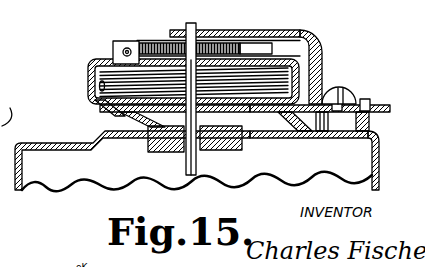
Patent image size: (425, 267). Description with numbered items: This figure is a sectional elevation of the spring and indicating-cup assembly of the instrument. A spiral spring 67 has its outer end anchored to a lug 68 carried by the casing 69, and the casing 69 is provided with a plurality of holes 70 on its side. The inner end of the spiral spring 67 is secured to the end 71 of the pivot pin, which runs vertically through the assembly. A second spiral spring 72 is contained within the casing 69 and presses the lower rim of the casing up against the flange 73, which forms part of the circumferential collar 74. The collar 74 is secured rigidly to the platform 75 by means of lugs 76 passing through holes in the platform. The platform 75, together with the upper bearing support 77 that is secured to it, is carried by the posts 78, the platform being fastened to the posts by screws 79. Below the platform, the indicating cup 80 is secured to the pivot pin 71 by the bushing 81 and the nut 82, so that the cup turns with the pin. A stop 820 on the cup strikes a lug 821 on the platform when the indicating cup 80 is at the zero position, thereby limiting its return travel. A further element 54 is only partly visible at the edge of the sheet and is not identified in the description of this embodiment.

The adjacent figure element (partial) 54 is at (9, 105).
The spiral spring 67 is at (160, 46).
The lug 68 is at (118, 52).
The casing 69 is at (254, 58).
The holes 70 is at (90, 86).
The end of the pivot pin 71 is at (198, 33).
The spiral spring 72 is at (272, 70).
The flange 73 is at (90, 99).
The circumferential collar 74 is at (122, 113).
The platform 75 is at (386, 103).
The lugs 76 is at (272, 133).
The upper bearing support 77 is at (316, 39).
The posts 78 is at (371, 119).
The screws 79 is at (338, 90).
The indicating cup 80 is at (379, 163).
The bushing 81 is at (148, 142).
The nut 82 is at (172, 152).
The stop 820 is at (284, 137).
The lug 821 is at (274, 138).